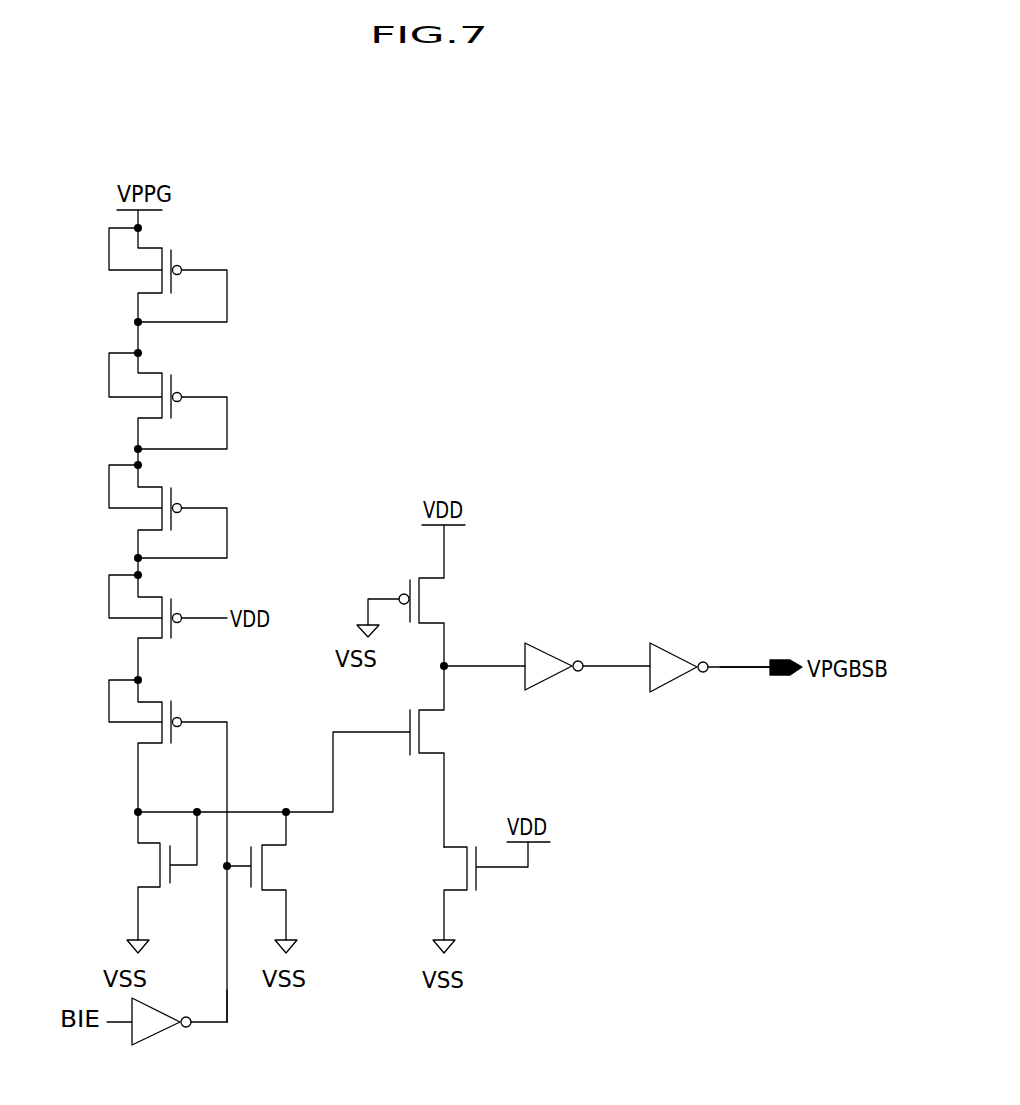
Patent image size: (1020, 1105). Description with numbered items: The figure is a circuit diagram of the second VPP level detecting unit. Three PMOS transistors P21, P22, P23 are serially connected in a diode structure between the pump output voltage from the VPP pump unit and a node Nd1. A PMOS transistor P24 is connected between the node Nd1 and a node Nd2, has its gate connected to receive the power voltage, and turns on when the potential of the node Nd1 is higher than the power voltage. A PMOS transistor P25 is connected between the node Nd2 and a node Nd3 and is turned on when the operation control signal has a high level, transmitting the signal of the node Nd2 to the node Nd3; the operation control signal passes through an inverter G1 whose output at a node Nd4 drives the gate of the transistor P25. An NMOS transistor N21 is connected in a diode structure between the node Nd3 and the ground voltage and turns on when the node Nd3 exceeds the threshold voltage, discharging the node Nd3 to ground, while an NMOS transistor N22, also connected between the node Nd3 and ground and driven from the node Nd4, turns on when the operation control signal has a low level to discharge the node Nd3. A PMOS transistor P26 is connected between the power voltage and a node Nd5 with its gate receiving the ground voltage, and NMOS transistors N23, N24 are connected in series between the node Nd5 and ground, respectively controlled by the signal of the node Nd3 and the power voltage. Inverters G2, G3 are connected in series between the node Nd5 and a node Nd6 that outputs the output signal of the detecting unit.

The PMOS transistor P21 is at (168, 273).
The PMOS transistor P22 is at (168, 399).
The PMOS transistor P23 is at (168, 509).
The PMOS transistor P24 is at (168, 625).
The PMOS transistor P25 is at (168, 851).
The PMOS transistor P26 is at (425, 595).
The NMOS transistor N21 is at (162, 882).
The NMOS transistor N22 is at (275, 882).
The NMOS transistor N23 is at (451, 756).
The NMOS transistor N24 is at (482, 897).
The inverter G1 is at (167, 1032).
The inverter G2 is at (587, 679).
The inverter G3 is at (710, 679).
The node Nd1 is at (137, 556).
The node Nd2 is at (137, 658).
The node Nd3 is at (137, 812).
The node Nd4 is at (227, 1001).
The node Nd5 is at (446, 665).
The node Nd6 is at (732, 667).